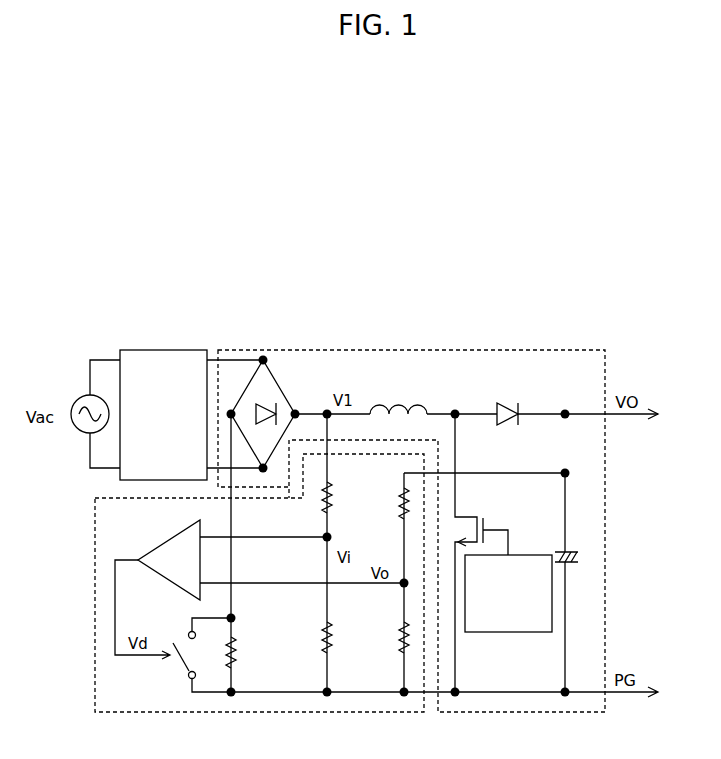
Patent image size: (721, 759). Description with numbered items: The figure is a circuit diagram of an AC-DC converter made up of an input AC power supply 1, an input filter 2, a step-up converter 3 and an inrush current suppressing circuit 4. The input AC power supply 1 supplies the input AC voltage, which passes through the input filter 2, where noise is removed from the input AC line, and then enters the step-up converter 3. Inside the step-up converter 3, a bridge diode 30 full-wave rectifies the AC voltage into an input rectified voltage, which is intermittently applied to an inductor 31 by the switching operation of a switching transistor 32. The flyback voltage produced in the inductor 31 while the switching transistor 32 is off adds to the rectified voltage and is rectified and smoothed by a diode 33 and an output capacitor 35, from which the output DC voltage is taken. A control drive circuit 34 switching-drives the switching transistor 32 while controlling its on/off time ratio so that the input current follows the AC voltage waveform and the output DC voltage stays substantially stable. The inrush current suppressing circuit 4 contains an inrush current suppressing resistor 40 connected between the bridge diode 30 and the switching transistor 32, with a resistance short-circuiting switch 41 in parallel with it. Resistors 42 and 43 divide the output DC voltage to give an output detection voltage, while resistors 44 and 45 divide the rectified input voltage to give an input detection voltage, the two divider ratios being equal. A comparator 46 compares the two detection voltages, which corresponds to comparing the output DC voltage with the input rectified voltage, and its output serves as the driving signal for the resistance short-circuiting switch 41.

The input AC power supply 1 is at (73, 397).
The input filter 2 is at (153, 350).
The step-up converter 3 is at (605, 372).
The inrush current suppressing circuit 4 is at (94, 518).
The bridge diode 30 is at (282, 383).
The inductor 31 is at (420, 402).
The switching transistor 32 is at (487, 522).
The diode 33 is at (502, 405).
The control drive circuit 34 is at (513, 633).
The output capacitor 35 is at (572, 567).
The inrush current suppressing resistor 40 is at (238, 645).
The resistance short-circuiting switch 41 is at (180, 667).
The resistor 42 is at (400, 512).
The resistor 43 is at (400, 640).
The resistor 44 is at (323, 508).
The resistor 45 is at (323, 647).
The comparator 46 is at (168, 540).